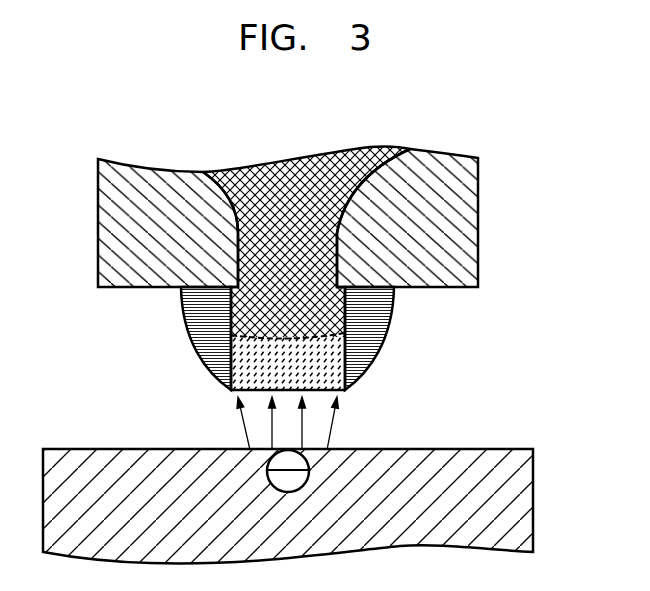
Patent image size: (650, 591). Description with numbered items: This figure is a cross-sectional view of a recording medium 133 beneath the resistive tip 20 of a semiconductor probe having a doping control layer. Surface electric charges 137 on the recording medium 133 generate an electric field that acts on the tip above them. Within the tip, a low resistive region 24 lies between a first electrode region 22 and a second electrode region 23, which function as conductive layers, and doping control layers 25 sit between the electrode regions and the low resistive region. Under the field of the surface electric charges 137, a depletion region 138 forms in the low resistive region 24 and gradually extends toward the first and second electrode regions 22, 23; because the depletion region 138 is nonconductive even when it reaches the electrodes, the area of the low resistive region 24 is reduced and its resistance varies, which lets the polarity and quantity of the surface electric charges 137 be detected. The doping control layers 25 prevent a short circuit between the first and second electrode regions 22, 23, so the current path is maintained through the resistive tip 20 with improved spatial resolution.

The resistive tip 20 is at (285, 270).
The first electrode region 22 is at (110, 233).
The second electrode region 23 is at (465, 229).
The low resistive region 24 is at (183, 311).
The doping control layer 25 is at (395, 311).
The recording medium 133 is at (525, 492).
The surface electric charges 137 is at (300, 450).
The depletion region 138 is at (200, 362).